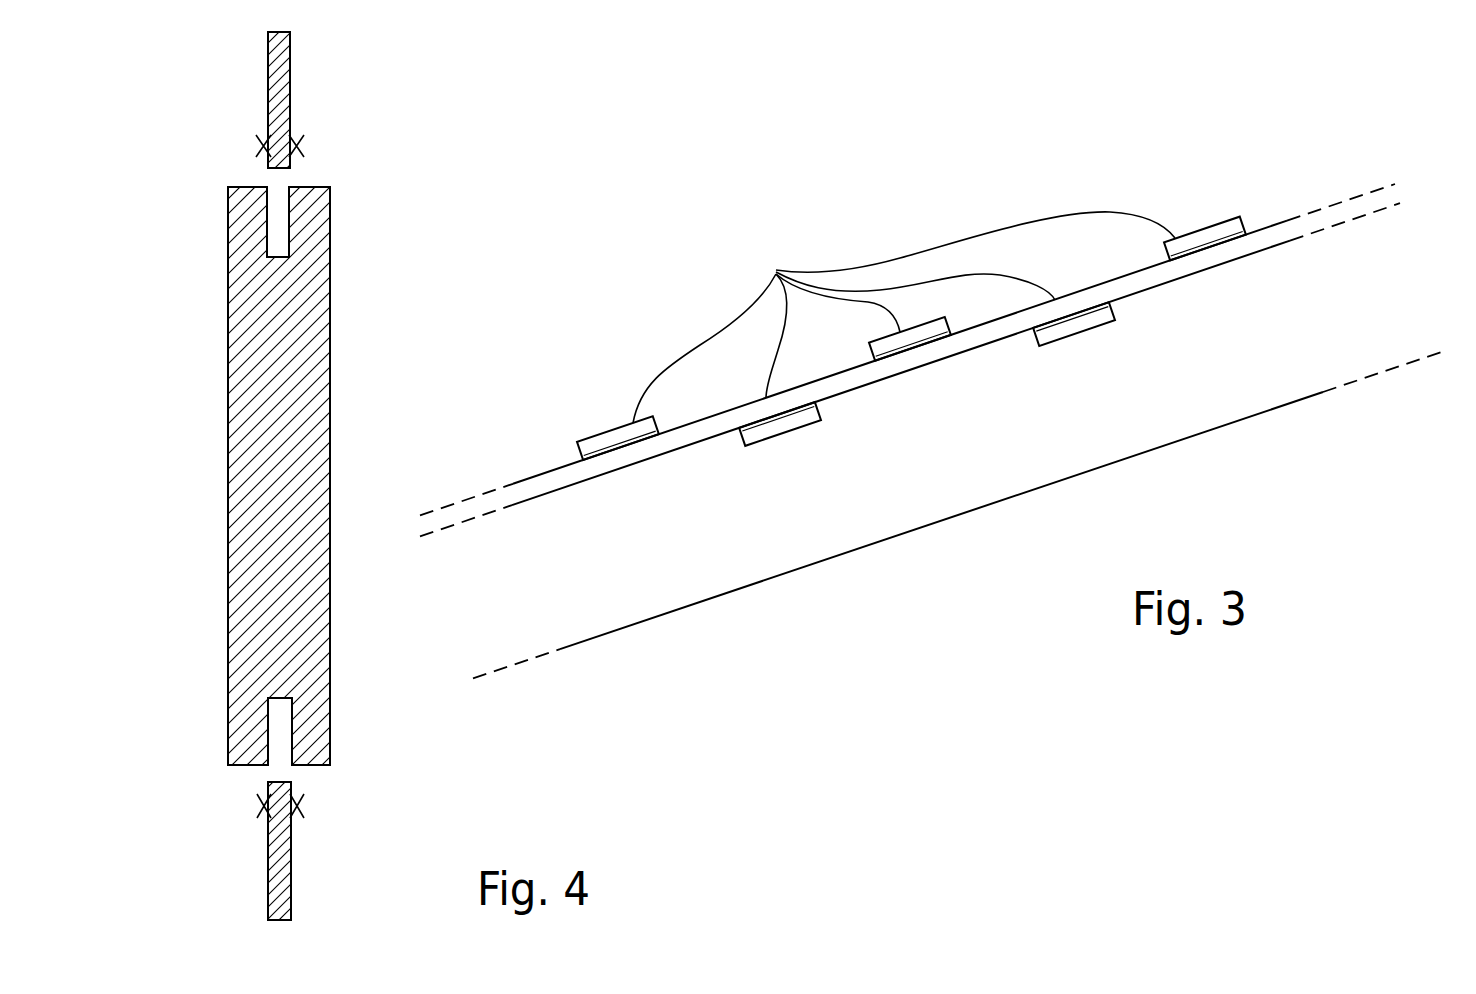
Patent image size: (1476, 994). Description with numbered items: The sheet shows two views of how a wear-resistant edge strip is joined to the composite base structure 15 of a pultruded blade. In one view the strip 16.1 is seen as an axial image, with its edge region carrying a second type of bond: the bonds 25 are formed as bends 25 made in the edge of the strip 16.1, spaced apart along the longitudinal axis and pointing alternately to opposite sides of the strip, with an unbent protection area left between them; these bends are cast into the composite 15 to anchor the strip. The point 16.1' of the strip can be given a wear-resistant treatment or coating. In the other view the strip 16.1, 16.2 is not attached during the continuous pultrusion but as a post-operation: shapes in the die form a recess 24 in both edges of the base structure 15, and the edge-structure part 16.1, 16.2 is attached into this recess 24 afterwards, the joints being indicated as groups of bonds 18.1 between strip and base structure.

In FIG. 4, the composite base structure 15 is at (297, 429).
In FIG. 4, the edge-structure part 16.1 is at (289, 100).
In FIG. 3, the edge-structure part 16.1 is at (910, 388).
In FIG. 3, the point of the edge-structure part 16.1' is at (960, 514).
In FIG. 4, the edge-structure part 16.2 is at (302, 877).
In FIG. 4, the group of bonds 18.1 is at (262, 150).
In FIG. 4, the recess 24 is at (273, 185).
In FIG. 3, the bonds formed of bends 25 is at (904, 317).